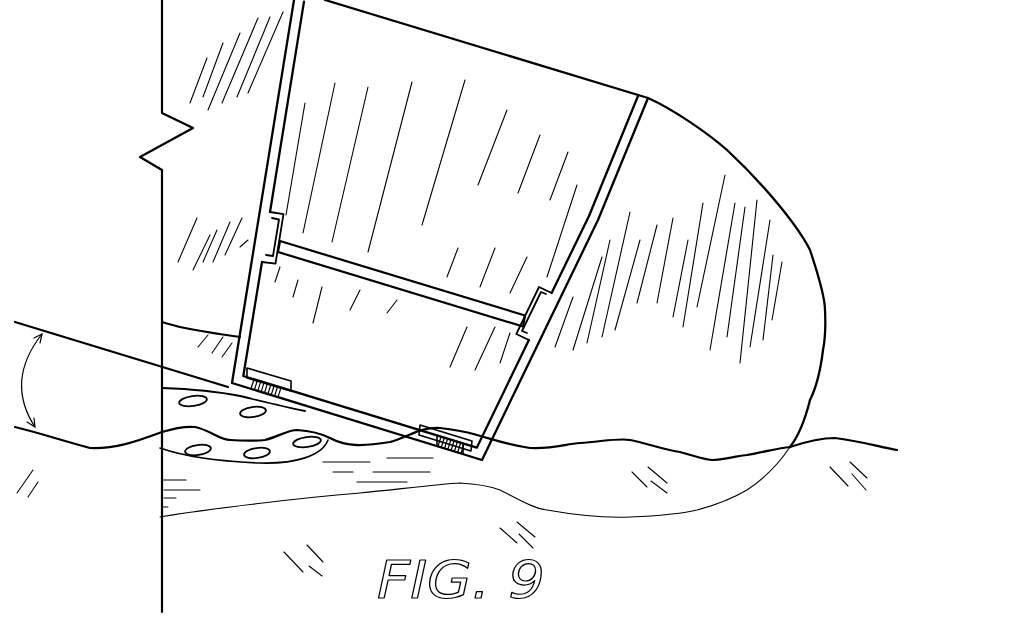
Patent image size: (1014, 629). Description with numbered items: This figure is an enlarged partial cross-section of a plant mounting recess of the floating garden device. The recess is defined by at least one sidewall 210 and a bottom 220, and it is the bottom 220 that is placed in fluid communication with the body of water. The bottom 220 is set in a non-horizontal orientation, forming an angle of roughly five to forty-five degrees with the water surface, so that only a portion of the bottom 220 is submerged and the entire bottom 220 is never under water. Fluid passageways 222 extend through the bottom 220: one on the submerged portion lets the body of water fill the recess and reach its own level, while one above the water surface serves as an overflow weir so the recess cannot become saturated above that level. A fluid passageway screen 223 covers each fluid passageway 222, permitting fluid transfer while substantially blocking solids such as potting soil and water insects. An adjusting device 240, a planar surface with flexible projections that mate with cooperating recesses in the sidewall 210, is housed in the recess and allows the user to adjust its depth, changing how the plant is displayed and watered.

The sidewall 210 is at (633, 128).
The adjusting device 240 is at (373, 268).
The fluid passageway screen 223 is at (290, 388).
The fluid passageway 222 is at (440, 460).
The bottom 220 is at (450, 462).